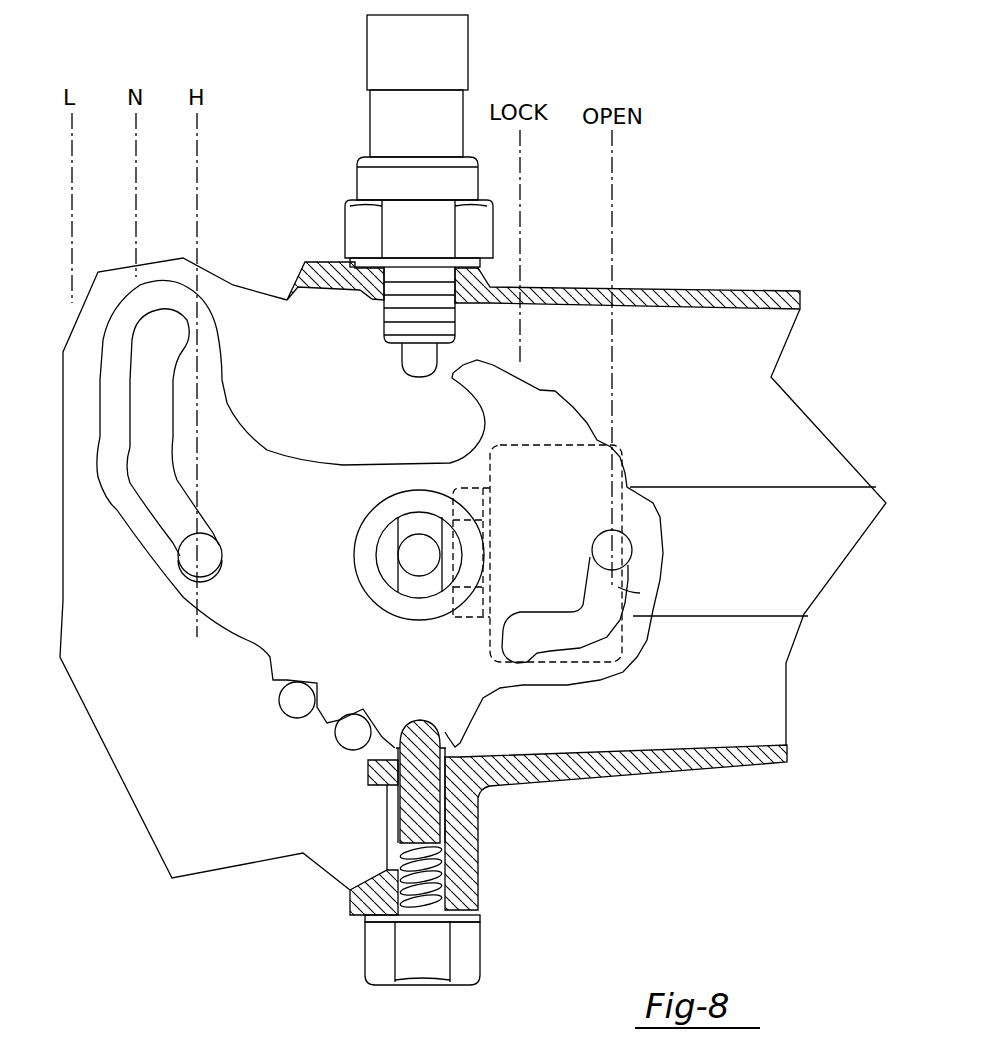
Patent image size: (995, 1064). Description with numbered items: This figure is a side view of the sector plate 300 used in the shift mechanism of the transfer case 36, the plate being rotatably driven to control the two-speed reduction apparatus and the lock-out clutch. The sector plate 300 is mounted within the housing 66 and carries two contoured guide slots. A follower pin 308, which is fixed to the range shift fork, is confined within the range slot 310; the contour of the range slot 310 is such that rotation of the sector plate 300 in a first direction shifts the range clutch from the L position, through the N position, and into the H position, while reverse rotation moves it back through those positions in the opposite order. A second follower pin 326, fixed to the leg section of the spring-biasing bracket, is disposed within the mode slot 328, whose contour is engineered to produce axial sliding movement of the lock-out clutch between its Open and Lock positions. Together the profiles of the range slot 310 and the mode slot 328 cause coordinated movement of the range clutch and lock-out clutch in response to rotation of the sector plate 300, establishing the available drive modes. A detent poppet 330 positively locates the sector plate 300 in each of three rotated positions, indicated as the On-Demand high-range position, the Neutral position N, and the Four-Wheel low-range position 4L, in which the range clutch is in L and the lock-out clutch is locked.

The transfer case 36 is at (698, 262).
The housing 66 is at (744, 295).
The sector plate 300 is at (270, 479).
The follower pin 308 is at (212, 557).
The range slot 310 is at (160, 530).
The follower pin 326 is at (627, 552).
The mode slot 328 is at (628, 610).
The detent poppet 330 is at (405, 817).
The Four-Wheel low-range position 4L is at (313, 680).
The Neutral position N is at (365, 712).